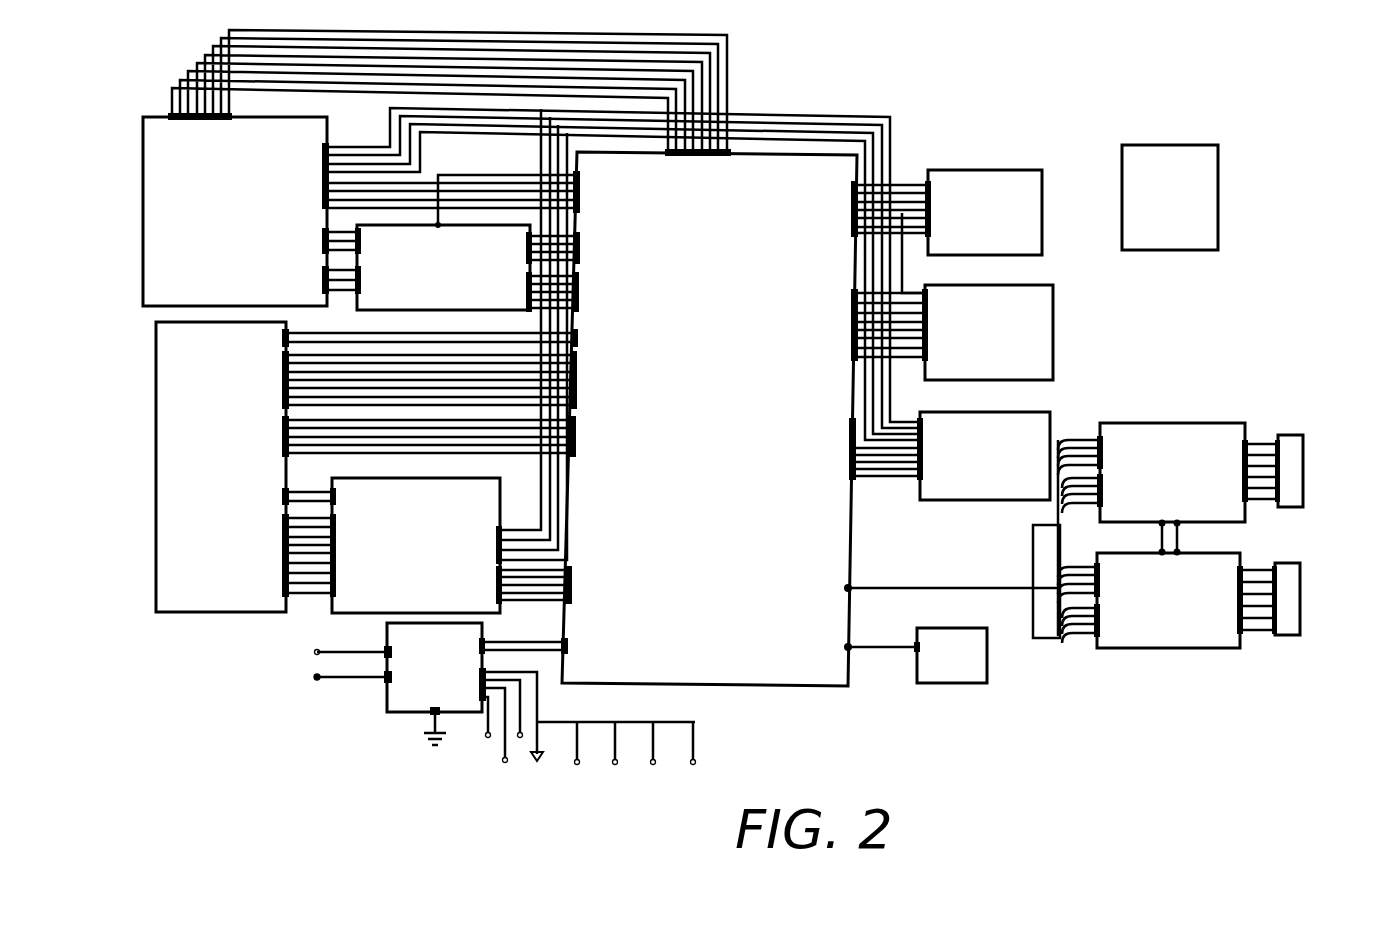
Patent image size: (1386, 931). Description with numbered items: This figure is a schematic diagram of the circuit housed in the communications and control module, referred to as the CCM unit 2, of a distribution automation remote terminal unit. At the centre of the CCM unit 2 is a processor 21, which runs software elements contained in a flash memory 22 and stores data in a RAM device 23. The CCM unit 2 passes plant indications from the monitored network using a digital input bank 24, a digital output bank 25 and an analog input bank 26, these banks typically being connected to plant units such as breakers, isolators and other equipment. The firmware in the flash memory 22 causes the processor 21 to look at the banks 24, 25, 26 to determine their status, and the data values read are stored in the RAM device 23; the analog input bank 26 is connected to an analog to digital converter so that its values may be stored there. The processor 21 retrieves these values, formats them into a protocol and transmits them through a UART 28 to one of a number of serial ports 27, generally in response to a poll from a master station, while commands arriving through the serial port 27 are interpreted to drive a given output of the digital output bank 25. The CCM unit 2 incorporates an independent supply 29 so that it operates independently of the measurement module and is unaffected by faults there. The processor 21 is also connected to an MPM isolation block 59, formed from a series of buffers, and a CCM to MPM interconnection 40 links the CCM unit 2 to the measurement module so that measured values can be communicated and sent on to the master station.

The communications and control module unit 2 is at (1053, 47).
The processor 21 is at (712, 398).
The flash memory 22 is at (1035, 340).
The RAM device 23 is at (1040, 428).
The digital input bank 24 is at (975, 665).
The digital output bank 25 is at (1295, 487).
The analog input bank 26 is at (993, 178).
The serial ports 27 is at (450, 283).
The UART 28 is at (232, 237).
The independent supply 29 is at (408, 693).
The CCM to MPM interconnection 40 is at (237, 478).
The MPM isolation block 59 is at (428, 562).